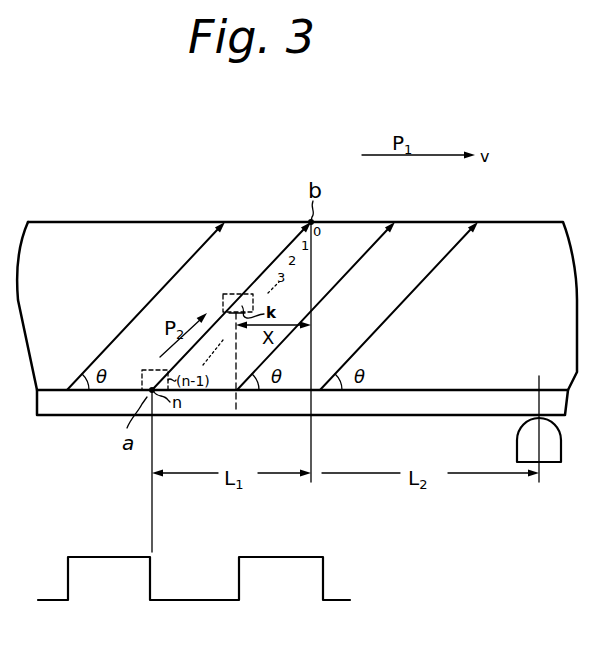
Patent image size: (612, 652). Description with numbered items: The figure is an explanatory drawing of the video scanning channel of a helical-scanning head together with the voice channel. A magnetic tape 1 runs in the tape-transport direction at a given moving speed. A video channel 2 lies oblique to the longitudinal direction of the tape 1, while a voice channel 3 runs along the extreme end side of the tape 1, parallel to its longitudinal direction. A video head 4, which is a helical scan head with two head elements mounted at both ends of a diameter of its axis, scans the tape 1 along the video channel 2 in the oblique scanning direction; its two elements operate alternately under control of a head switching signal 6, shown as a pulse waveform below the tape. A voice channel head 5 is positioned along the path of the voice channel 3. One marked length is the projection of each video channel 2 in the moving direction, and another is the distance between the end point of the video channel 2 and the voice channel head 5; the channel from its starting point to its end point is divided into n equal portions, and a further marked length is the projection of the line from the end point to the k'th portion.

The magnetic tape 1 is at (97, 233).
The video channel 2 is at (208, 240).
The voice channel 3 is at (78, 407).
The video head 4 is at (142, 374).
The voice channel head 5 is at (554, 437).
The head switching signal 6 is at (68, 577).